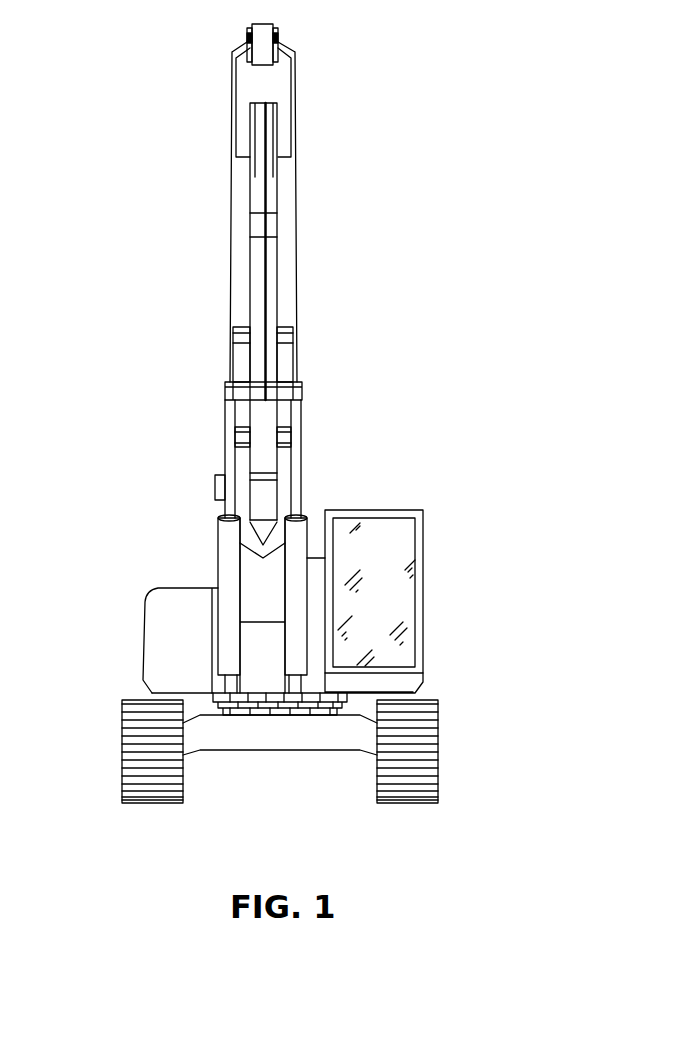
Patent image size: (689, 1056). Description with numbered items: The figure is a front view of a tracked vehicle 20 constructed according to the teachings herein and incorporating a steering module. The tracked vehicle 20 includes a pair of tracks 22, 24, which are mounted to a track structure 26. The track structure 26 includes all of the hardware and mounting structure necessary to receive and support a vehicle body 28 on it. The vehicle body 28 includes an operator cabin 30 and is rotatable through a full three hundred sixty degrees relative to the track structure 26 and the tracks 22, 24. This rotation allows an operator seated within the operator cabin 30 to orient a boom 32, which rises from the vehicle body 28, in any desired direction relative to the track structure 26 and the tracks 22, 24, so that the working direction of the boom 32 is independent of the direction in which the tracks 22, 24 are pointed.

The tracked vehicle 20 is at (485, 265).
The track 22 is at (438, 777).
The track 24 is at (122, 762).
The track structure 26 is at (247, 750).
The vehicle body 28 is at (145, 625).
The operator cabin 30 is at (422, 540).
The boom 32 is at (278, 38).